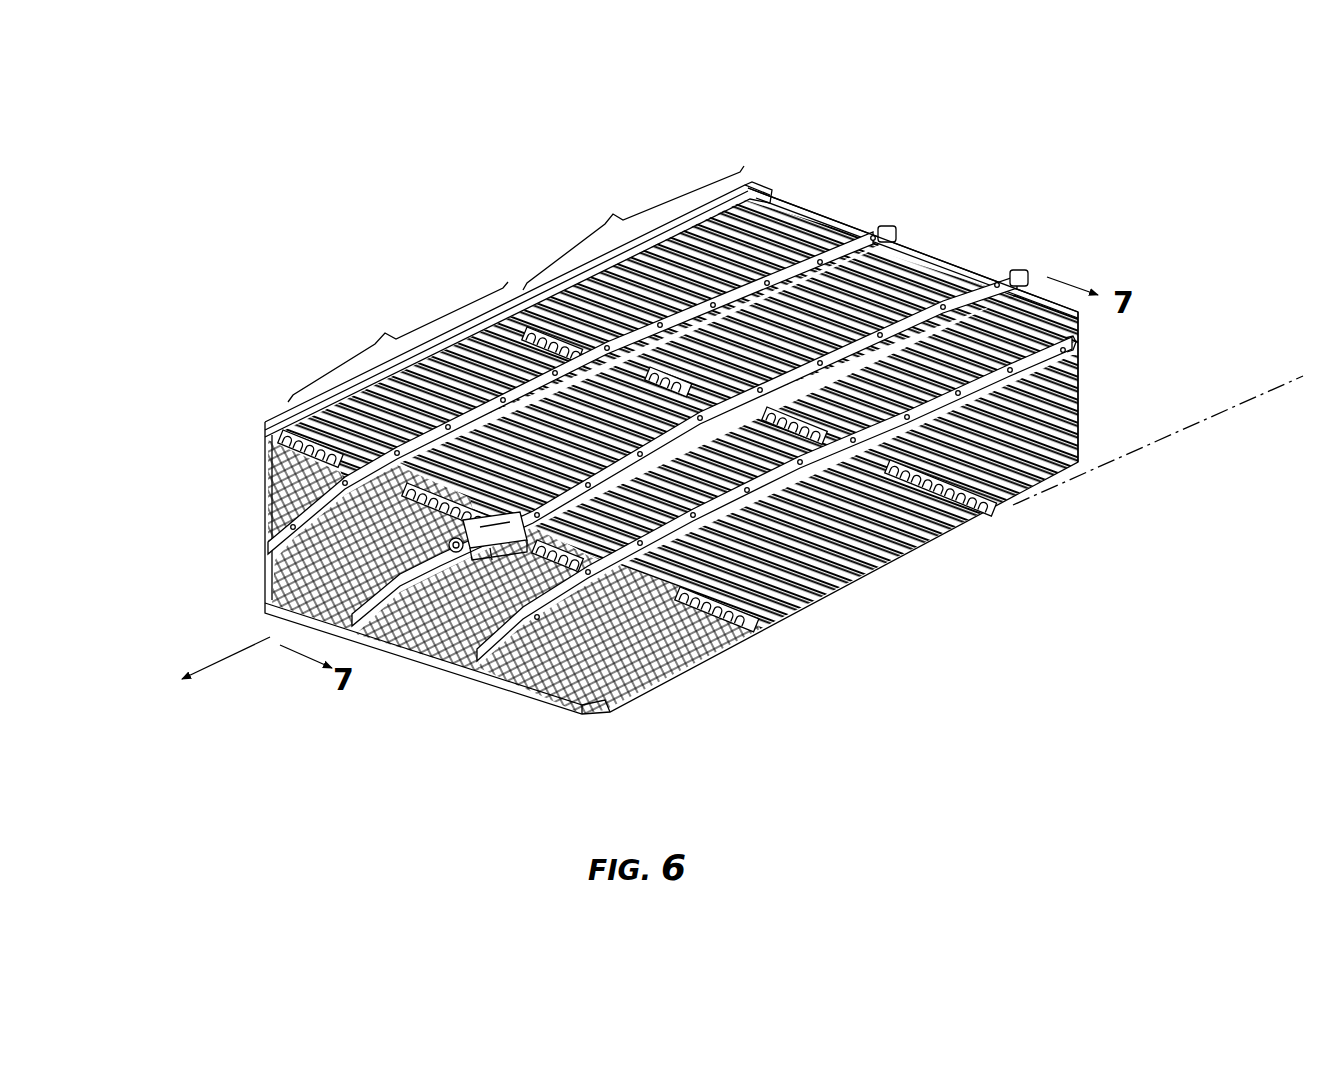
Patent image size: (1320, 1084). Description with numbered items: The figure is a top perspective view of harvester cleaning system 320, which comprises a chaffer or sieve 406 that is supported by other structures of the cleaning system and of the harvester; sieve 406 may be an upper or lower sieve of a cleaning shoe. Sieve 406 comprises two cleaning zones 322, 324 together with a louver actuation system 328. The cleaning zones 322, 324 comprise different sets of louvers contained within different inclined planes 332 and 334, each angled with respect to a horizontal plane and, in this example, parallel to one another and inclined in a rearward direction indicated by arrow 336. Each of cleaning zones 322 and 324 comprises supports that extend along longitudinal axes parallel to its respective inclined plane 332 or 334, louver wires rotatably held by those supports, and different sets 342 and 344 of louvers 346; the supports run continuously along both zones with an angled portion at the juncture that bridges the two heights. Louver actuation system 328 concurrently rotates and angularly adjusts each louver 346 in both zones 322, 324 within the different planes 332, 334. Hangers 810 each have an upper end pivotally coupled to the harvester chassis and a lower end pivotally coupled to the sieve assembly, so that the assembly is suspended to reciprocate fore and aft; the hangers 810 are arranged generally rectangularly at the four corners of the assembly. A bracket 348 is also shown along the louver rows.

The harvester cleaning system 320 is at (160, 370).
The cleaning zone 322 is at (398, 342).
The cleaning zone 324 is at (633, 228).
The louver actuation system 328 is at (470, 585).
The inclined plane 332 is at (1148, 462).
The inclined plane 334 is at (1242, 400).
The arrow 336 is at (225, 643).
The set of louvers 342 is at (797, 612).
The set of louvers 344 is at (795, 220).
The louver 346 is at (905, 278).
The arched bracket 348 is at (762, 610).
The sieve 406 is at (1142, 255).
The hanger 810 is at (1000, 293).